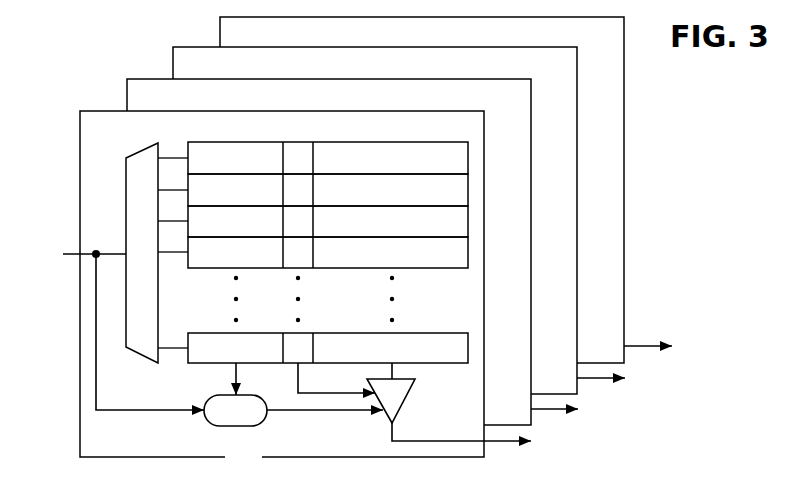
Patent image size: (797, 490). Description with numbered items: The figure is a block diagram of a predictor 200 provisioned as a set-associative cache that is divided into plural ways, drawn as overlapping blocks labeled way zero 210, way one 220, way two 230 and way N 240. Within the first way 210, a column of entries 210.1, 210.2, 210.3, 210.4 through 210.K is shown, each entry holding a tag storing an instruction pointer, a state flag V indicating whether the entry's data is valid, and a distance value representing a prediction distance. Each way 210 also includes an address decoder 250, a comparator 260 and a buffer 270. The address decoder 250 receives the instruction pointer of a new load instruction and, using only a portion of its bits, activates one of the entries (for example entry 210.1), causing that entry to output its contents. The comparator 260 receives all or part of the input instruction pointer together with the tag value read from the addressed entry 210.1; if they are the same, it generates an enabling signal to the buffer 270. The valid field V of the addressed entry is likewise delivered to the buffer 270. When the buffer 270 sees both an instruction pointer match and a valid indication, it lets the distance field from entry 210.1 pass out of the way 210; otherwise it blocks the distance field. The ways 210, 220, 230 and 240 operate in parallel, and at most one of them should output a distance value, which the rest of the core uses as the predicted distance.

The predictor 200 is at (733, 75).
The way 0 210 is at (275, 288).
The way 1 220 is at (352, 252).
The way 2 230 is at (399, 220).
The way N 240 is at (446, 190).
The entry 210.1 is at (469, 157).
The entry 210.2 is at (469, 190).
The entry 210.3 is at (469, 221).
The entry 210.4 is at (469, 252).
The entry 210.K is at (469, 347).
The address decoder 250 is at (157, 344).
The comparator 260 is at (237, 426).
The buffer 270 is at (403, 404).